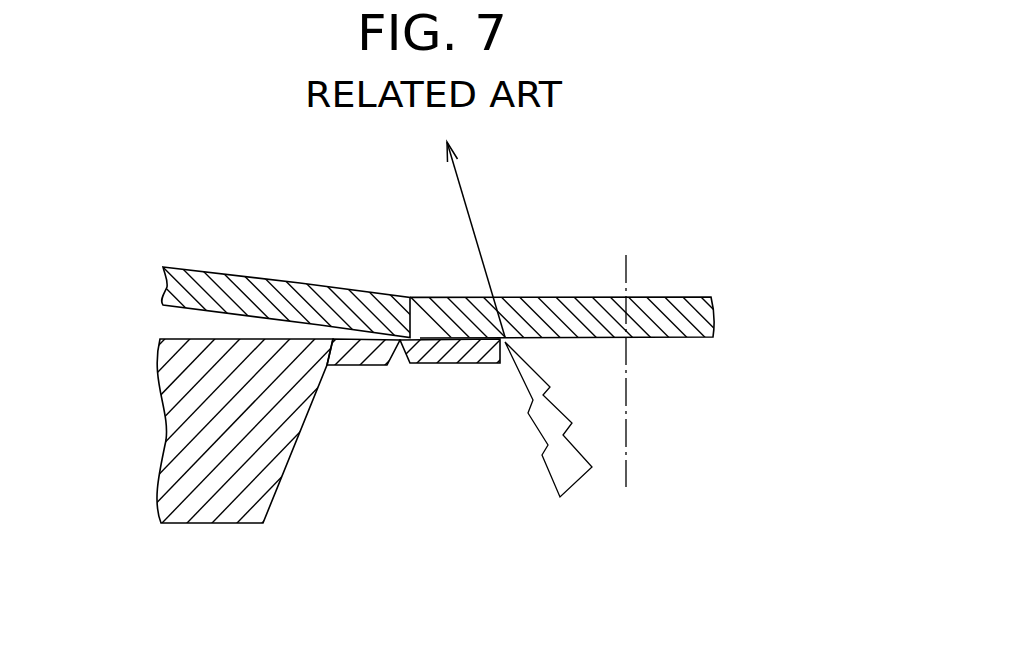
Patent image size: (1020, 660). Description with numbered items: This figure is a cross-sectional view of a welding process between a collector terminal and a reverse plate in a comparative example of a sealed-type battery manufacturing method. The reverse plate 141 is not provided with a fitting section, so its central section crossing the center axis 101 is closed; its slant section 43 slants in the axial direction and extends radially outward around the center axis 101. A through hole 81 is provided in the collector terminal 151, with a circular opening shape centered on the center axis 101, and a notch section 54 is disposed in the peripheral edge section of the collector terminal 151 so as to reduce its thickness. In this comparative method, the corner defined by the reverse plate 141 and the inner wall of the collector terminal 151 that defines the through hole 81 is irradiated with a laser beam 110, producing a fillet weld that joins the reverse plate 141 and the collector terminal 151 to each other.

The slant section 43 is at (287, 300).
The reverse plate 141 is at (553, 297).
The center axis 101 is at (627, 276).
The collector terminal 151 is at (217, 527).
The notch section 54 is at (385, 368).
The through hole 81 is at (508, 358).
The laser beam 110 is at (550, 475).